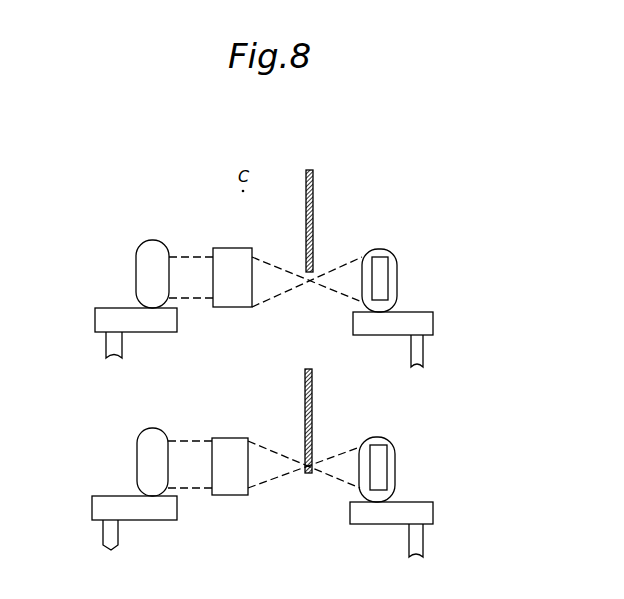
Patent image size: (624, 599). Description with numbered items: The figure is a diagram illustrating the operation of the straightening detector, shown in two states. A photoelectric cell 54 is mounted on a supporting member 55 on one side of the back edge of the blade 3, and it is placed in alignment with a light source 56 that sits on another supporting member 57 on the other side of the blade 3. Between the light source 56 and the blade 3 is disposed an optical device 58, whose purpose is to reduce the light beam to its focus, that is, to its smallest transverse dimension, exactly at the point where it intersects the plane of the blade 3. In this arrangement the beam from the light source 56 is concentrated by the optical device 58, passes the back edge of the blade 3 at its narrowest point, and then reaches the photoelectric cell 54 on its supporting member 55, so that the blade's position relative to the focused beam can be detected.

The blade 3 is at (313, 214).
The photoelectric cell 54 is at (383, 282).
The supporting member 55 is at (400, 325).
The light source 56 is at (148, 273).
The supporting member 57 is at (168, 323).
The optical device 58 is at (232, 371).